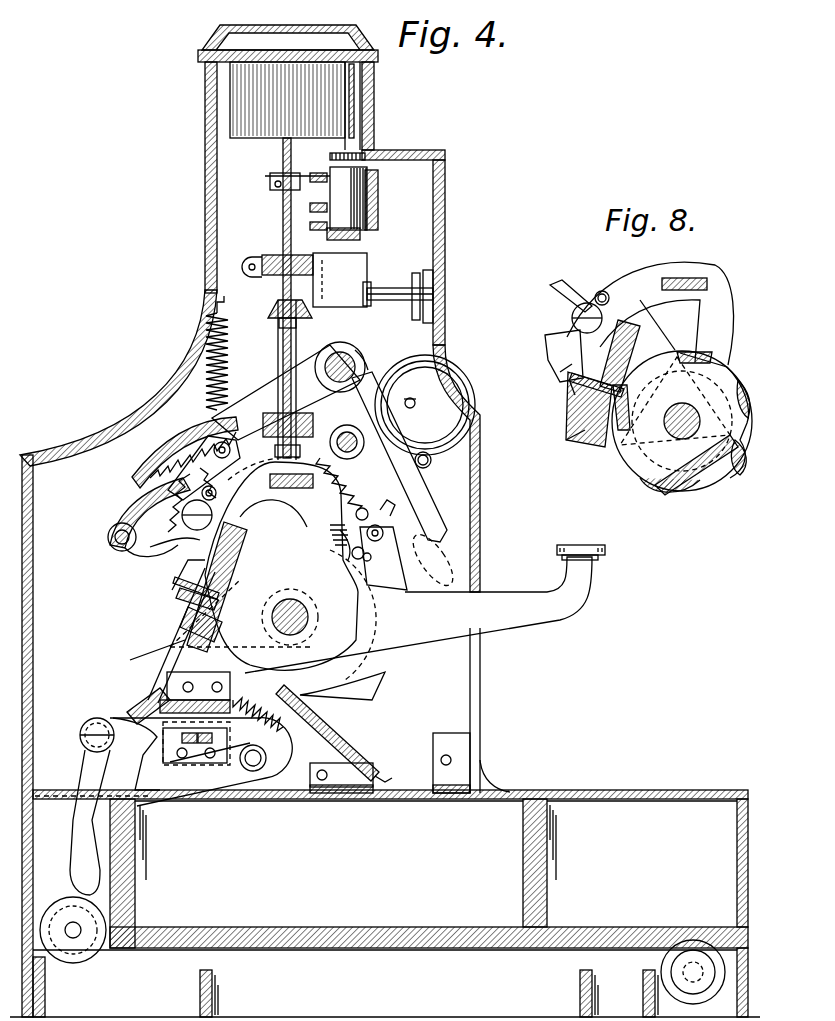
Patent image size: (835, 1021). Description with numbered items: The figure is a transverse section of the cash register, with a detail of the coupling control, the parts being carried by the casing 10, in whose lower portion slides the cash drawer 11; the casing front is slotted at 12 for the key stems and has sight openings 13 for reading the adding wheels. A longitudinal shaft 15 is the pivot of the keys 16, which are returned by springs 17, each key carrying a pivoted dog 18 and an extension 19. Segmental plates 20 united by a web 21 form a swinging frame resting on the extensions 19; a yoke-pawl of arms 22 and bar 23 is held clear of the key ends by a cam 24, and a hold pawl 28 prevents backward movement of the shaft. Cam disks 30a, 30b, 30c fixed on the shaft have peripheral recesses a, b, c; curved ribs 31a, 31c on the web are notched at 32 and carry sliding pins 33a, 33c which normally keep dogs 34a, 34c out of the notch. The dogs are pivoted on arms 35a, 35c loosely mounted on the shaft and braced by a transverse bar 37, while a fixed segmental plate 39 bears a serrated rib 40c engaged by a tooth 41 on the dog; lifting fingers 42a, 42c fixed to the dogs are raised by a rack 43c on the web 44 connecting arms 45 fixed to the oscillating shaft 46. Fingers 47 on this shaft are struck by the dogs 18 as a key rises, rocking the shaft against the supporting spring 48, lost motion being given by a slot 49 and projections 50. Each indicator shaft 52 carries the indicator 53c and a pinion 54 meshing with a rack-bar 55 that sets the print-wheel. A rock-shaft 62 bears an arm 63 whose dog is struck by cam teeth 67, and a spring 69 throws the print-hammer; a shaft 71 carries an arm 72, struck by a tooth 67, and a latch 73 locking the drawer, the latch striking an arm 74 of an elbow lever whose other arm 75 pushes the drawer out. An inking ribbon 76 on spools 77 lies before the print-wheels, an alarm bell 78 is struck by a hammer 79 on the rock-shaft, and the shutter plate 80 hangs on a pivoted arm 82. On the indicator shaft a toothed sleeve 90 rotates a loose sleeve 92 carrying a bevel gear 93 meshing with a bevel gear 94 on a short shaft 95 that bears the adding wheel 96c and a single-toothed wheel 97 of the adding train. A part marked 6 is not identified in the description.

In FIG. 4, the operating knob 6 is at (581, 542).
In FIG. 4, the casing 10 is at (33, 645).
In FIG. 4, the drawer 11 is at (526, 876).
In FIG. 4, the slot 12 is at (481, 673).
In FIG. 4, the sight openings 13 is at (441, 278).
In FIG. 4, the shaft 15 is at (309, 617).
In FIG. 8, the shaft 15 is at (674, 434).
In FIG. 4, the keys 16 is at (418, 615).
In FIG. 4, the springs 17 is at (352, 752).
In FIG. 4, the dog 18 is at (386, 506).
In FIG. 4, the extension 19 is at (178, 660).
In FIG. 4, the segmental plates 20 is at (268, 550).
In FIG. 8, the segmental plates 20 is at (600, 440).
In FIG. 4, the longitudinal web 21 is at (217, 560).
In FIG. 8, the longitudinal web 21 is at (620, 356).
In FIG. 4, the arms 22 is at (158, 660).
In FIG. 4, the longitudinal bar 23 is at (140, 690).
In FIG. 4, the incline or cam 24 is at (158, 708).
In FIG. 4, the hold pawl 28 is at (272, 550).
In FIG. 8, the cam disk 30a is at (668, 400).
In FIG. 8, the cam disk 30b is at (680, 490).
In FIG. 4, the cam disk 30c is at (268, 600).
In FIG. 8, the cam disk 30c is at (722, 478).
In FIG. 8, the curved rib 31a is at (572, 440).
In FIG. 4, the curved rib 31c is at (186, 616).
In FIG. 4, the notch 32 is at (178, 594).
In FIG. 8, the notch 32 is at (578, 386).
In FIG. 8, the sliding pin 33a is at (570, 405).
In FIG. 4, the sliding pin 33c is at (178, 583).
In FIG. 8, the dog 34a is at (560, 372).
In FIG. 4, the dog 34c is at (172, 590).
In FIG. 8, the arm 35a is at (678, 352).
In FIG. 4, the arm 35c is at (342, 535).
In FIG. 4, the transverse bar 37 is at (309, 490).
In FIG. 8, the transverse bar 37 is at (705, 280).
In FIG. 4, the fixed segmental plate 39 is at (140, 510).
In FIG. 4, the serrated rib 40c is at (115, 545).
In FIG. 4, the tooth 41 is at (172, 530).
In FIG. 8, the tooth 41 is at (547, 345).
In FIG. 8, the lifting finger 42a is at (570, 290).
In FIG. 4, the lifting finger 42c is at (158, 497).
In FIG. 4, the toothed rib or rack 43c is at (185, 437).
In FIG. 4, the web 44 is at (168, 472).
In FIG. 4, the arms 45 is at (286, 392).
In FIG. 4, the shaft 46 is at (366, 376).
In FIG. 4, the fingers 47 is at (364, 445).
In FIG. 4, the supporting spring 48 is at (209, 362).
In FIG. 4, the slot 49 is at (358, 360).
In FIG. 4, the projection 50 is at (343, 358).
In FIG. 4, the indicator shaft 52 is at (284, 208).
In FIG. 4, the indicator 53c is at (258, 130).
In FIG. 4, the pinion 54 is at (270, 180).
In FIG. 4, the rack-bar 55 is at (315, 172).
In FIG. 4, the rock-shaft 62 is at (408, 407).
In FIG. 4, the second arm 63 is at (318, 478).
In FIG. 4, the cam teeth 67 is at (378, 689).
In FIG. 4, the spring 69 is at (352, 486).
In FIG. 4, the shaft 71 is at (260, 768).
In FIG. 4, the arm 72 is at (283, 728).
In FIG. 4, the latch 73 is at (201, 762).
In FIG. 4, the arm of elbow lever 74 is at (138, 748).
In FIG. 4, the arm of elbow lever 75 is at (86, 768).
In FIG. 4, the inking-ribbon 76 is at (379, 212).
In FIG. 4, the spools 77 is at (366, 200).
In FIG. 4, the alarm bell 78 is at (425, 405).
In FIG. 4, the bell hammer 79 is at (431, 458).
In FIG. 4, the shutter plate 80 is at (353, 133).
In FIG. 4, the pivoted arm 82 is at (323, 306).
In FIG. 4, the sleeve 90 is at (284, 340).
In FIG. 4, the sleeve 92 is at (280, 324).
In FIG. 4, the bevel gear 93 is at (272, 311).
In FIG. 4, the bevel gear 94 is at (255, 280).
In FIG. 4, the short shaft 95 is at (386, 291).
In FIG. 4, the adding wheel 96c is at (434, 293).
In FIG. 4, the single-toothed wheel 97 is at (412, 305).
In FIG. 8, the peripheral recesses a is at (690, 362).
In FIG. 8, the peripheral recesses b is at (748, 405).
In FIG. 4, the peripheral recesses c is at (360, 662).
In FIG. 8, the peripheral recesses c is at (742, 385).